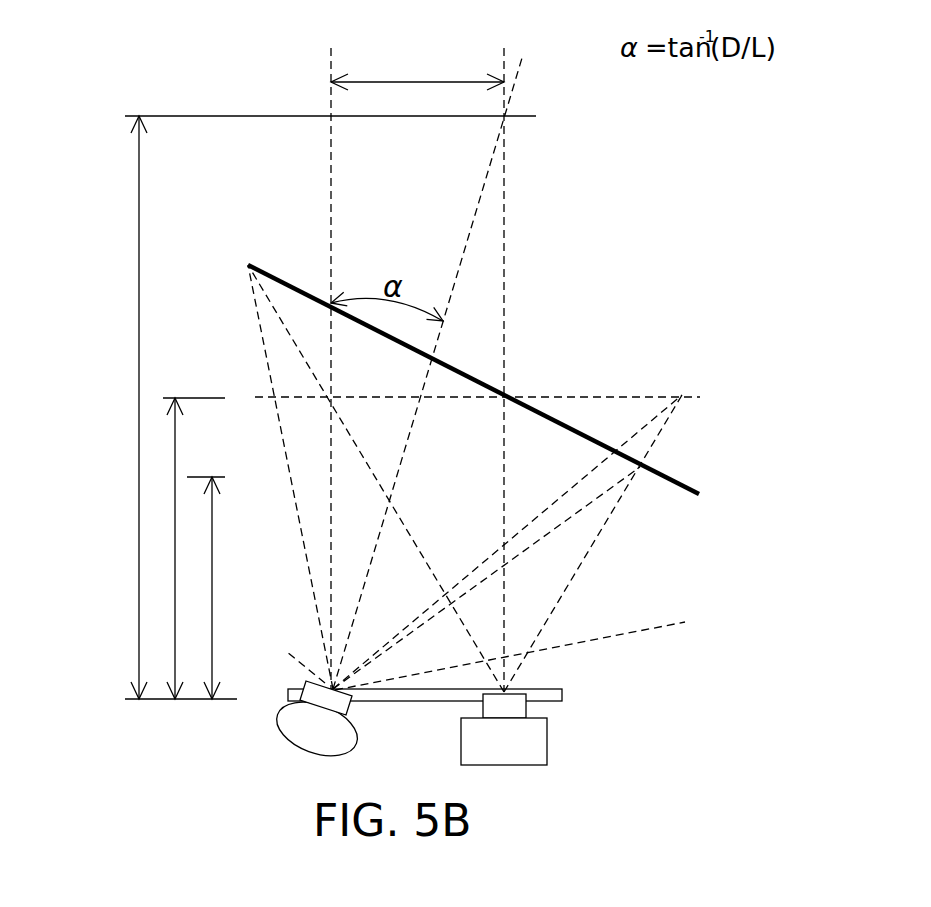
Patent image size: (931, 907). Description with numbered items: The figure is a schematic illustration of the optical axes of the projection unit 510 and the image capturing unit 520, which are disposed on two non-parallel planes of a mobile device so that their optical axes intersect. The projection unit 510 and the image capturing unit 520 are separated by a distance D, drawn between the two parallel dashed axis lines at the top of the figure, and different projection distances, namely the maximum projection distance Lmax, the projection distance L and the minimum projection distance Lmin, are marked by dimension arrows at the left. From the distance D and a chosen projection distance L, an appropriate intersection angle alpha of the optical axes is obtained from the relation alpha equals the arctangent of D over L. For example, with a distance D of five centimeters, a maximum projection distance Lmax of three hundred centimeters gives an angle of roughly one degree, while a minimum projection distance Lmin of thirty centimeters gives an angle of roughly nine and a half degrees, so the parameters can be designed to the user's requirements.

The projection unit 510 is at (542, 741).
The image capturing unit 520 is at (353, 738).
The projection distance L is at (194, 548).
The maximum projection distance Lmax is at (112, 407).
The minimum projection distance Lmin is at (227, 588).
The distance between the projection unit and the image capturing unit D is at (417, 71).